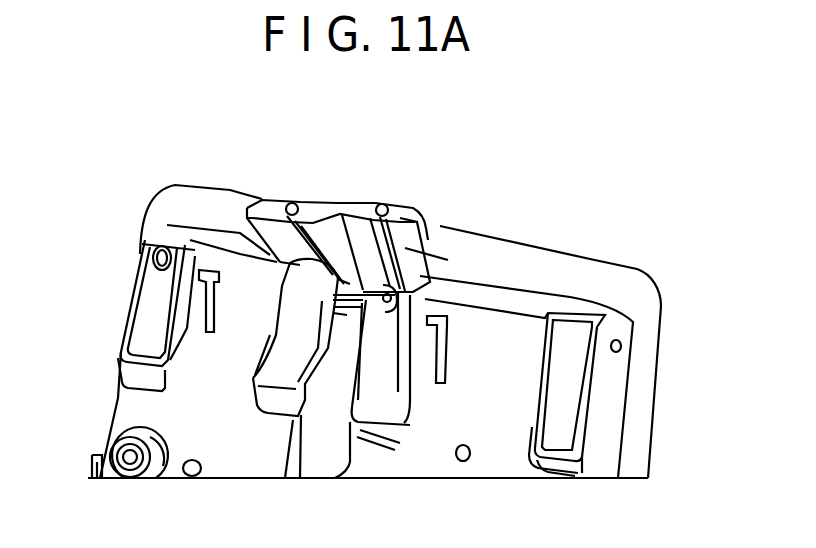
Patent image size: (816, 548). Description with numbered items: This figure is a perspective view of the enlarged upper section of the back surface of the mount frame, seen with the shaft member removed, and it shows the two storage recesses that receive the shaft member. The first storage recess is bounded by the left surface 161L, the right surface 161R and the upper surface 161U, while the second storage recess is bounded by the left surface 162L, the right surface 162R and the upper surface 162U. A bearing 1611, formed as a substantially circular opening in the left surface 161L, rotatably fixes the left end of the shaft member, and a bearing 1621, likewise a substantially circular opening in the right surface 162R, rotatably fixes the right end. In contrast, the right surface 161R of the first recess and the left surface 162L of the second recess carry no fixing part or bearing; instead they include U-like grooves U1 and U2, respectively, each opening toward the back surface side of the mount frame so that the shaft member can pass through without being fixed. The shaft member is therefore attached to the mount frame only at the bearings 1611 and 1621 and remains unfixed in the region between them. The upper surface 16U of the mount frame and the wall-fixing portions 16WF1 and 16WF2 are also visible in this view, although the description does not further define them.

The upper surface of wall-mount member 16U is at (547, 250).
The upper surface 161U is at (523, 305).
The left surface 161L is at (613, 376).
The bearing 1611 is at (622, 344).
The right surface 161R is at (378, 333).
The upper surface 162U is at (180, 222).
The bearing 1621 is at (142, 246).
The right surface 162R is at (137, 261).
The left surface 162L is at (300, 478).
The first wall fixing portion 16WF1 is at (387, 201).
The second wall fixing portion 16WF2 is at (267, 198).
The U-like groove U1 is at (337, 205).
The U-like groove U2 is at (463, 237).